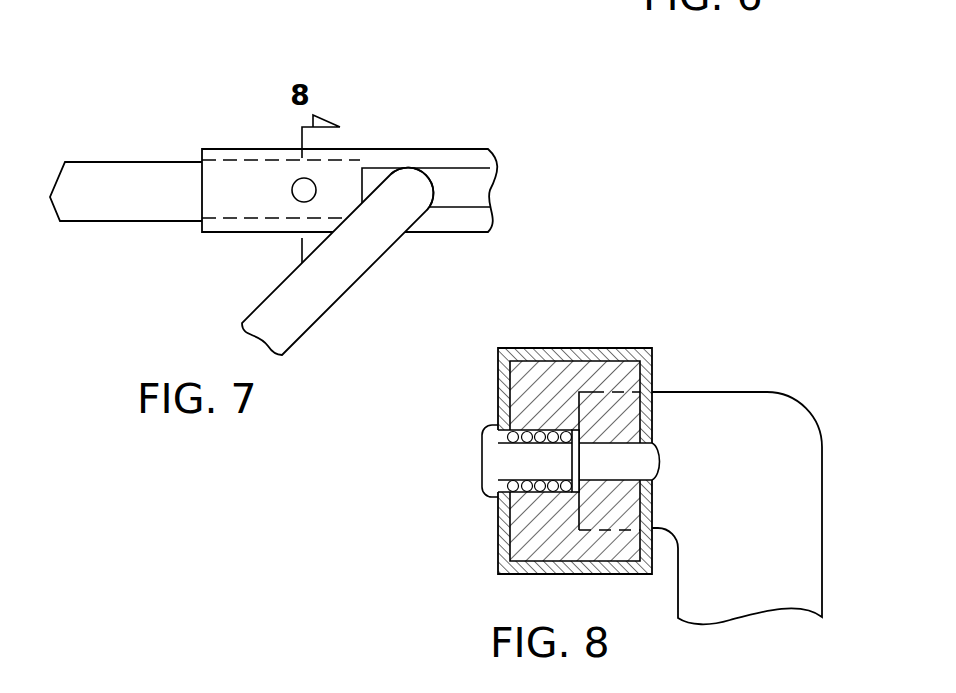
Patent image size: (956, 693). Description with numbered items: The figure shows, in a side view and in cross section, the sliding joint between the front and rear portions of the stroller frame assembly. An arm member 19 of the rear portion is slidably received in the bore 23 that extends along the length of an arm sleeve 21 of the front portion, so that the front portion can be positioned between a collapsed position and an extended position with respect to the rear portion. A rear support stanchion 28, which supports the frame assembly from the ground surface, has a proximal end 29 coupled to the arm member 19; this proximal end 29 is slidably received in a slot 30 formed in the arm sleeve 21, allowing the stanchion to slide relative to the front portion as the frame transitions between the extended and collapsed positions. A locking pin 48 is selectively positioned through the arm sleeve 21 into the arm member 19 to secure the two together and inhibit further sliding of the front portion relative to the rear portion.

In FIG. 7, the arm member 19 is at (118, 180).
In FIG. 8, the arm member 19 is at (600, 373).
In FIG. 7, the arm sleeve 21 is at (244, 180).
In FIG. 8, the arm sleeve 21 is at (512, 348).
In FIG. 8, the bore 23 is at (552, 378).
In FIG. 7, the rear support stanchion 28 is at (330, 293).
In FIG. 8, the rear support stanchion 28 is at (800, 502).
In FIG. 7, the proximal end 29 is at (432, 178).
In FIG. 7, the slot 30 is at (377, 180).
In FIG. 8, the locking pin 48 is at (617, 457).